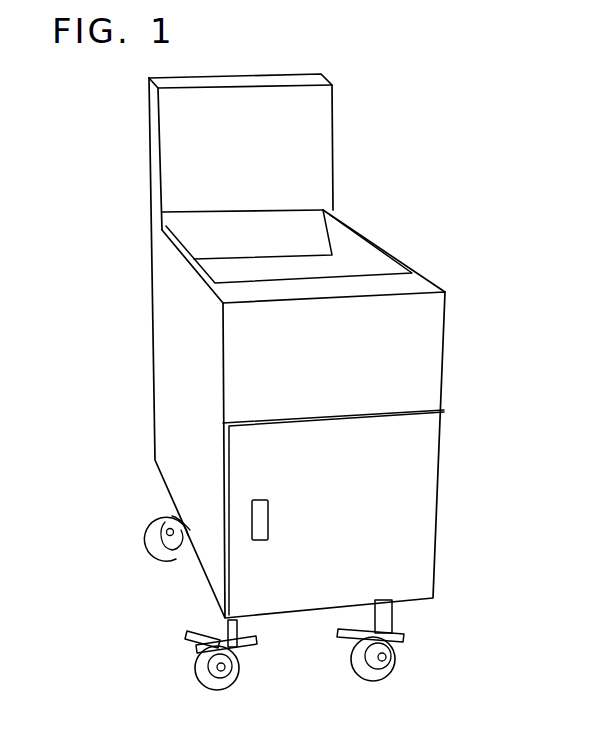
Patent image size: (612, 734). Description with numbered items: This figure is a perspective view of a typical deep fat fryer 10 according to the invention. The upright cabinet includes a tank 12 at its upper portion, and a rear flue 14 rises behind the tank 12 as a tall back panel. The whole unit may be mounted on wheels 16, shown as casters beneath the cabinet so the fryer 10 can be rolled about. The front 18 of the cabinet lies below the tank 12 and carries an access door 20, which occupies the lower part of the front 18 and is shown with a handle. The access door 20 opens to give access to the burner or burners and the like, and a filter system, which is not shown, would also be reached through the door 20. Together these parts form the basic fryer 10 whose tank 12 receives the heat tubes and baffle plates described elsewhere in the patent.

The deep fat fryer 10 is at (460, 232).
The tank 12 is at (375, 233).
The rear flue 14 is at (335, 120).
The wheels 16 is at (238, 628).
The front 18 is at (347, 383).
The access door 20 is at (353, 506).